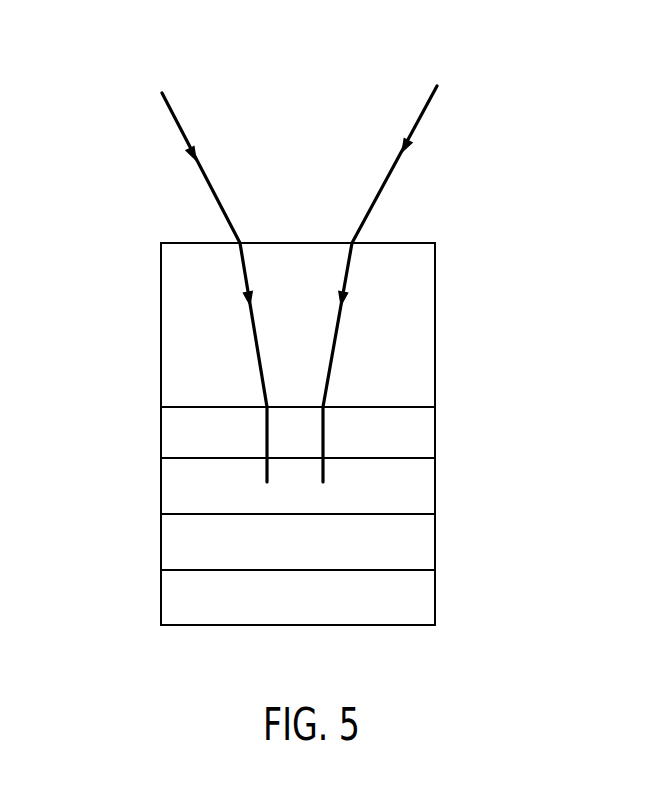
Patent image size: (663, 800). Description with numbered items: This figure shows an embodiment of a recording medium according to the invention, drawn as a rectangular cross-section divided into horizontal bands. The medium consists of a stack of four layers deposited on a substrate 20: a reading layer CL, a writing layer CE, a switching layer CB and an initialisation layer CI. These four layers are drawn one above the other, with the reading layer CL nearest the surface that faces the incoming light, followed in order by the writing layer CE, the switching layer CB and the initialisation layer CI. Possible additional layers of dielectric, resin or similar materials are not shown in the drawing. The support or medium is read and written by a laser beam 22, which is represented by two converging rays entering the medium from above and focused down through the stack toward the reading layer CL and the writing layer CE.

The substrate 20 is at (425, 353).
The laser beam 22 is at (383, 175).
The reading layer CL is at (167, 441).
The writing layer CE is at (173, 497).
The switching layer CB is at (170, 552).
The initialisation layer CI is at (168, 606).